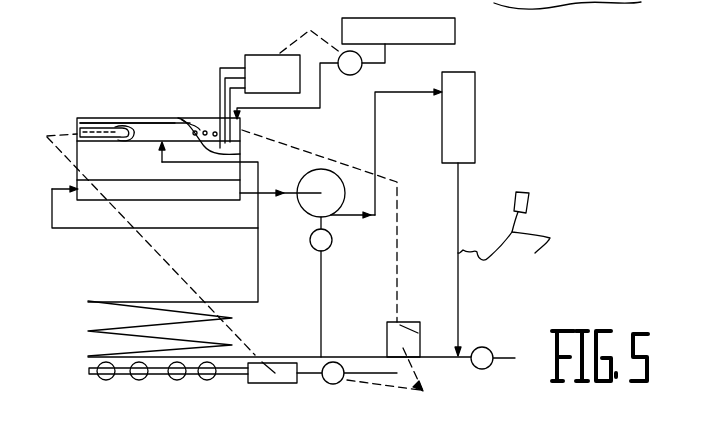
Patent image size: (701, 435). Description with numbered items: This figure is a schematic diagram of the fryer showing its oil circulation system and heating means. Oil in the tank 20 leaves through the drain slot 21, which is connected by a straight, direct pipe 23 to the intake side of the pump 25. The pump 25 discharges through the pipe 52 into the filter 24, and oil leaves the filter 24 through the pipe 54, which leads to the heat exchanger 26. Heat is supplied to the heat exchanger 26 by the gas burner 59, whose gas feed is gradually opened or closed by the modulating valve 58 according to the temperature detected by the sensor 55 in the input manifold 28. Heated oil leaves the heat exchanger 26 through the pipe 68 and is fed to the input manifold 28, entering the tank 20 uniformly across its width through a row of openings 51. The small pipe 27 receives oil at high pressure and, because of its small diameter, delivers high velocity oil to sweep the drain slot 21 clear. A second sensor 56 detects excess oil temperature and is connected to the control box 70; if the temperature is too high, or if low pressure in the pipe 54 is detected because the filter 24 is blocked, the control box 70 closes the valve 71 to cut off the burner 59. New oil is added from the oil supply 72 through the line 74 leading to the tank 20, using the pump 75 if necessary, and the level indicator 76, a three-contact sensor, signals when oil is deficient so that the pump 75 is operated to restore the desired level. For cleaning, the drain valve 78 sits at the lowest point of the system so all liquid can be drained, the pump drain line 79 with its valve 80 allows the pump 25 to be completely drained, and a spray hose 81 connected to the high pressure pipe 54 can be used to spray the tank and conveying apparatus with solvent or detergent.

The tank 20 is at (157, 168).
The drain slot 21 is at (120, 188).
The pipe 23 is at (298, 190).
The filter 24 is at (476, 100).
The pump 25 is at (338, 170).
The heat exchanger 26 is at (88, 331).
The small pipe 27 is at (58, 189).
The input manifold 28 is at (157, 129).
The openings 51 is at (182, 118).
The pipe 52 is at (378, 122).
The pipe 54 is at (461, 208).
The sensor 55 is at (96, 128).
The sensor 56 is at (243, 131).
The modulating valve 58 is at (293, 381).
The burner 59 is at (190, 381).
The pipe 68 is at (258, 272).
The control box 70 is at (423, 320).
The valve 71 is at (337, 384).
The oil supply 72 is at (455, 40).
The line 74 is at (388, 64).
The pump 75 is at (359, 73).
The level indicator 76 is at (221, 100).
The drain valve 78 is at (484, 348).
The pump drain line 79 is at (321, 306).
The valve 80 is at (334, 249).
The spray hose 81 is at (504, 234).